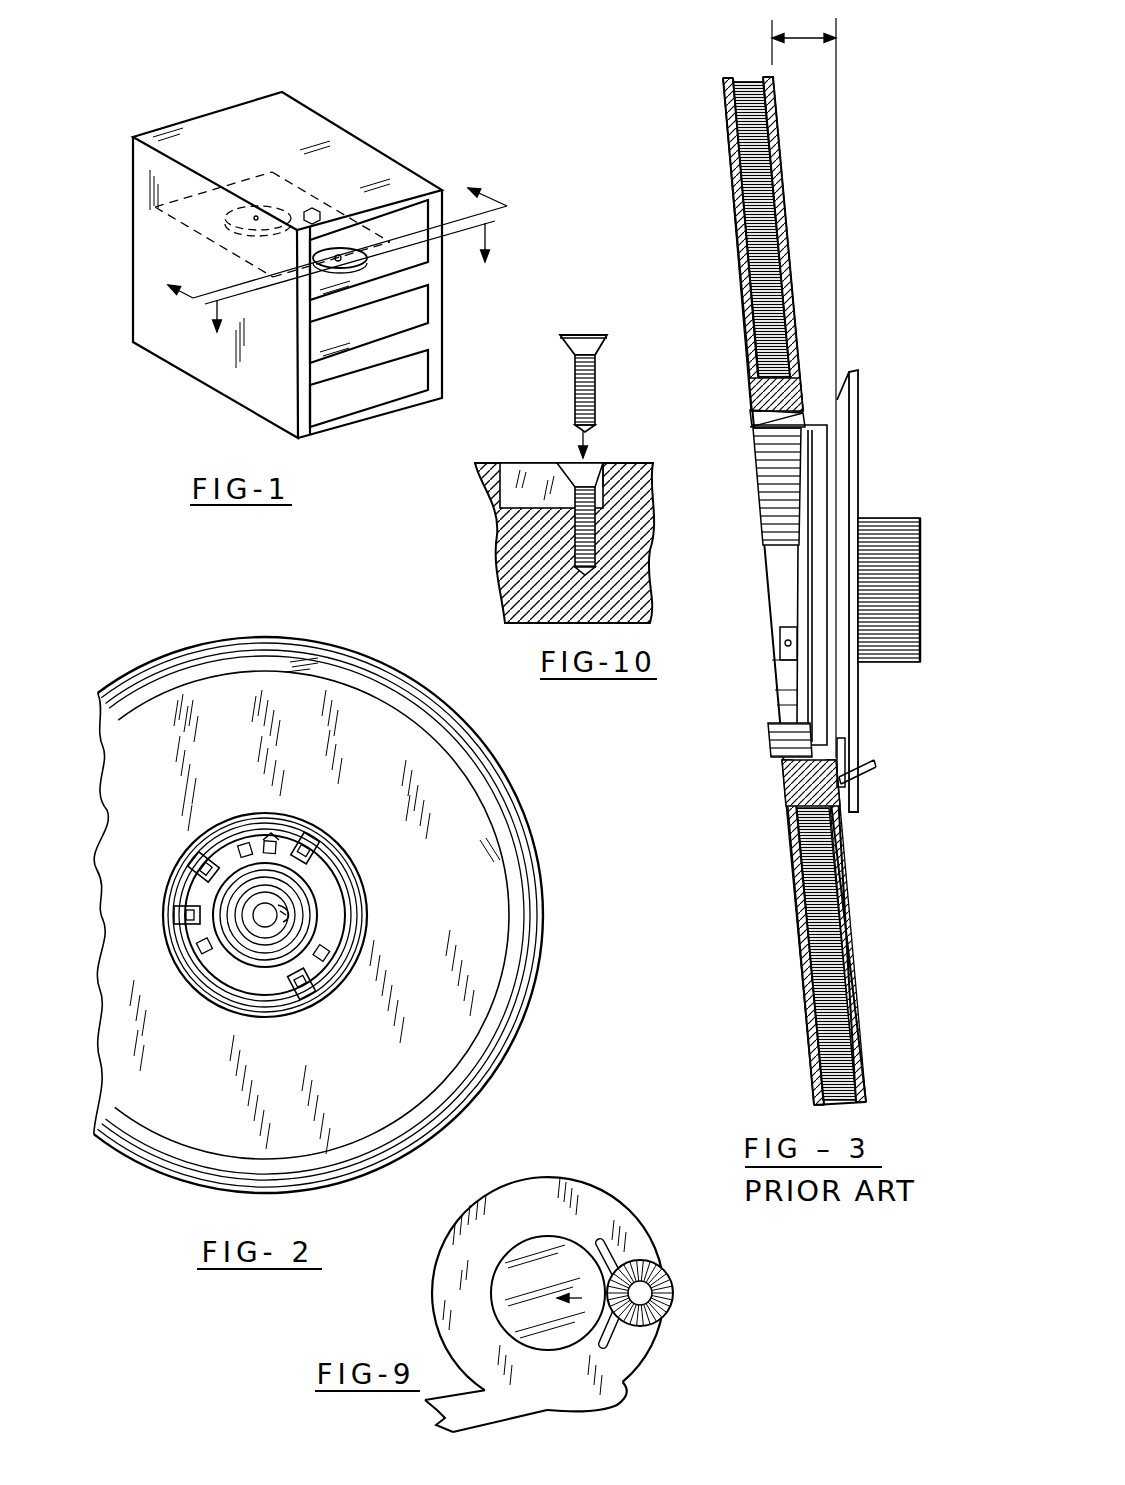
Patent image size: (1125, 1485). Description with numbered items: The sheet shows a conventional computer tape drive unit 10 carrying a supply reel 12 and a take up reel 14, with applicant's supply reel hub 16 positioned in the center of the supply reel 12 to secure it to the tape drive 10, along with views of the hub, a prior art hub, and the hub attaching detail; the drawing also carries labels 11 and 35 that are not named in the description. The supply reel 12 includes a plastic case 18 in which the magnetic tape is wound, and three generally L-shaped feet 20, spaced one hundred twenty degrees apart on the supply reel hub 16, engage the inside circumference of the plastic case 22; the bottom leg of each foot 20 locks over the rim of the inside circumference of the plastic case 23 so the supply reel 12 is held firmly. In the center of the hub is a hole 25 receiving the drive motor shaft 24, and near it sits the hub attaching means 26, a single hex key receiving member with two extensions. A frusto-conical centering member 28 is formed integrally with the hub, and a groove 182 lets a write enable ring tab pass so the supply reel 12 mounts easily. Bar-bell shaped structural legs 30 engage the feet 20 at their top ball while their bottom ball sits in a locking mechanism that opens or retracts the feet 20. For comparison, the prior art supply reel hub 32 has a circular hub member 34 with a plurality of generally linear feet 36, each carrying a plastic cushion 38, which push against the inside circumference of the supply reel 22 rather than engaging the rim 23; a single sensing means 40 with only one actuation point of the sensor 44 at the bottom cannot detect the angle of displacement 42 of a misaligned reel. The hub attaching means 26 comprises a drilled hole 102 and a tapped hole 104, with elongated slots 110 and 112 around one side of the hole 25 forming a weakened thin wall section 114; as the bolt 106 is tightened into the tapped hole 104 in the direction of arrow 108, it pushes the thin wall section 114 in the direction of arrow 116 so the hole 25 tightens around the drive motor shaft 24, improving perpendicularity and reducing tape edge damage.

In FIG. 1, the computer tape drive unit 10 is at (385, 177).
In FIG. 9, the computer tape drive unit 10 is at (677, 1252).
In FIG. 1, the spindle 11 is at (308, 210).
In FIG. 1, the supply reel 12 is at (352, 243).
In FIG. 3, the supply reel 12 is at (750, 183).
In FIG. 2, the supply reel 12 is at (363, 812).
In FIG. 1, the take up reel 14 is at (263, 200).
In FIG. 1, the supply reel hub 16 is at (342, 256).
In FIG. 10, the supply reel hub 16 is at (505, 583).
In FIG. 2, the supply reel hub 16 is at (337, 923).
In FIG. 3, the plastic case 18 is at (689, 59).
In FIG. 2, the plastic case 18 is at (527, 829).
In FIG. 2, the L-shaped feet 20 is at (350, 877).
In FIG. 3, the inside circumference of the plastic case 22 is at (752, 420).
In FIG. 2, the inside circumference of the plastic case 22 is at (350, 885).
In FIG. 2, the rim of the inside circumference of the plastic case 23 is at (287, 827).
In FIG. 2, the drive motor shaft 24 is at (190, 997).
In FIG. 9, the drive motor shaft 24 is at (533, 1258).
In FIG. 2, the hole 25 is at (285, 925).
In FIG. 9, the hole 25 is at (497, 1300).
In FIG. 2, the hub attaching means 26 is at (300, 923).
In FIG. 9, the hub attaching means 26 is at (677, 1294).
In FIG. 2, the centering member 28 is at (207, 873).
In FIG. 2, the bar-bell shaped structural legs 30 is at (280, 837).
In FIG. 3, the prior art supply reel hub 32 is at (885, 400).
In FIG. 3, the circular hub member 34 is at (818, 501).
In FIG. 3, the shaft 35 is at (890, 662).
In FIG. 3, the feet 36 is at (760, 442).
In FIG. 3, the plastic cushion 38 is at (750, 396).
In FIG. 3, the sensing means 40 is at (863, 785).
In FIG. 3, the angle of displacement 42 is at (786, 38).
In FIG. 3, the actuation point of the sensor 44 is at (860, 757).
In FIG. 9, the drilled hole 102 is at (670, 1270).
In FIG. 10, the tapped hole 104 is at (597, 537).
In FIG. 10, the bolt 106 is at (582, 335).
In FIG. 10, the arrow 108 is at (582, 452).
In FIG. 10, the elongated slot 110 is at (522, 463).
In FIG. 9, the elongated slot 110 is at (630, 1384).
In FIG. 10, the elongated slot 112 is at (603, 477).
In FIG. 9, the elongated slot 112 is at (610, 1240).
In FIG. 9, the weakened thin wall section 114 is at (663, 1330).
In FIG. 9, the arrow 116 is at (581, 1298).
In FIG. 2, the groove 182 is at (237, 990).